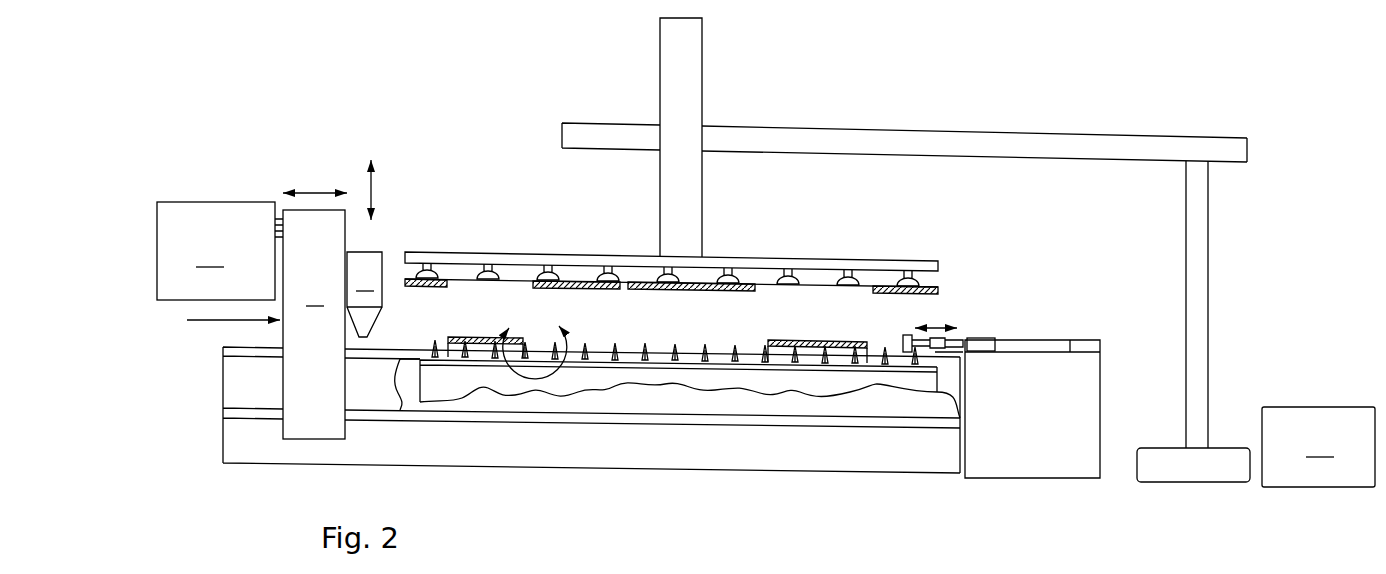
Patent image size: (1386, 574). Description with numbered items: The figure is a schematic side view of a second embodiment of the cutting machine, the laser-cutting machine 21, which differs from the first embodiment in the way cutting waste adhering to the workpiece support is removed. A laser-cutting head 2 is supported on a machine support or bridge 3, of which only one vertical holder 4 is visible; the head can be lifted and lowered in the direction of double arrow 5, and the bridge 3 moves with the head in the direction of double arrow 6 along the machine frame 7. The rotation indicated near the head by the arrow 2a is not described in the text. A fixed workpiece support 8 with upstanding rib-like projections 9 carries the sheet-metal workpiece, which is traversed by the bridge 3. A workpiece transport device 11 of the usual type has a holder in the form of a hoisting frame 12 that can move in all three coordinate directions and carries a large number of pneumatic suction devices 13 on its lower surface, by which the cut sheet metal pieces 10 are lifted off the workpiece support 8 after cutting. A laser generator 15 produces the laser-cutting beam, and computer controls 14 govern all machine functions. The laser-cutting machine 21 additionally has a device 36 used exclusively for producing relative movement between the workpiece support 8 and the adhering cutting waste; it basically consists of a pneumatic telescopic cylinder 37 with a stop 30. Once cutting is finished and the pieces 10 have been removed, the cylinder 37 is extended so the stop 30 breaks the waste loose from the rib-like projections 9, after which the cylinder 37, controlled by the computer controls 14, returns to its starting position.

The laser-cutting head 2 is at (364, 294).
The rotation of cutting head 2a is at (535, 345).
The machine support or bridge 3 is at (221, 330).
The vertical holder 4 is at (314, 324).
The double arrow 5 is at (373, 187).
The double arrow 6 is at (313, 196).
The machine frame 7 is at (272, 435).
The workpiece support 8 is at (899, 378).
The rib-like projections 9 is at (704, 353).
The cut sheet metal pieces 10 is at (428, 281).
The workpiece transport device 11 is at (643, 107).
The hoisting frame 12 is at (757, 263).
The pneumatic suction devices 13 is at (848, 280).
The computer controls 14 is at (1318, 447).
The laser generator 15 is at (220, 251).
The laser-cutting machine 21 is at (253, 150).
The stop 30 is at (900, 338).
The device 36 is at (990, 332).
The pneumatic telescopic cylinder 37 is at (985, 349).